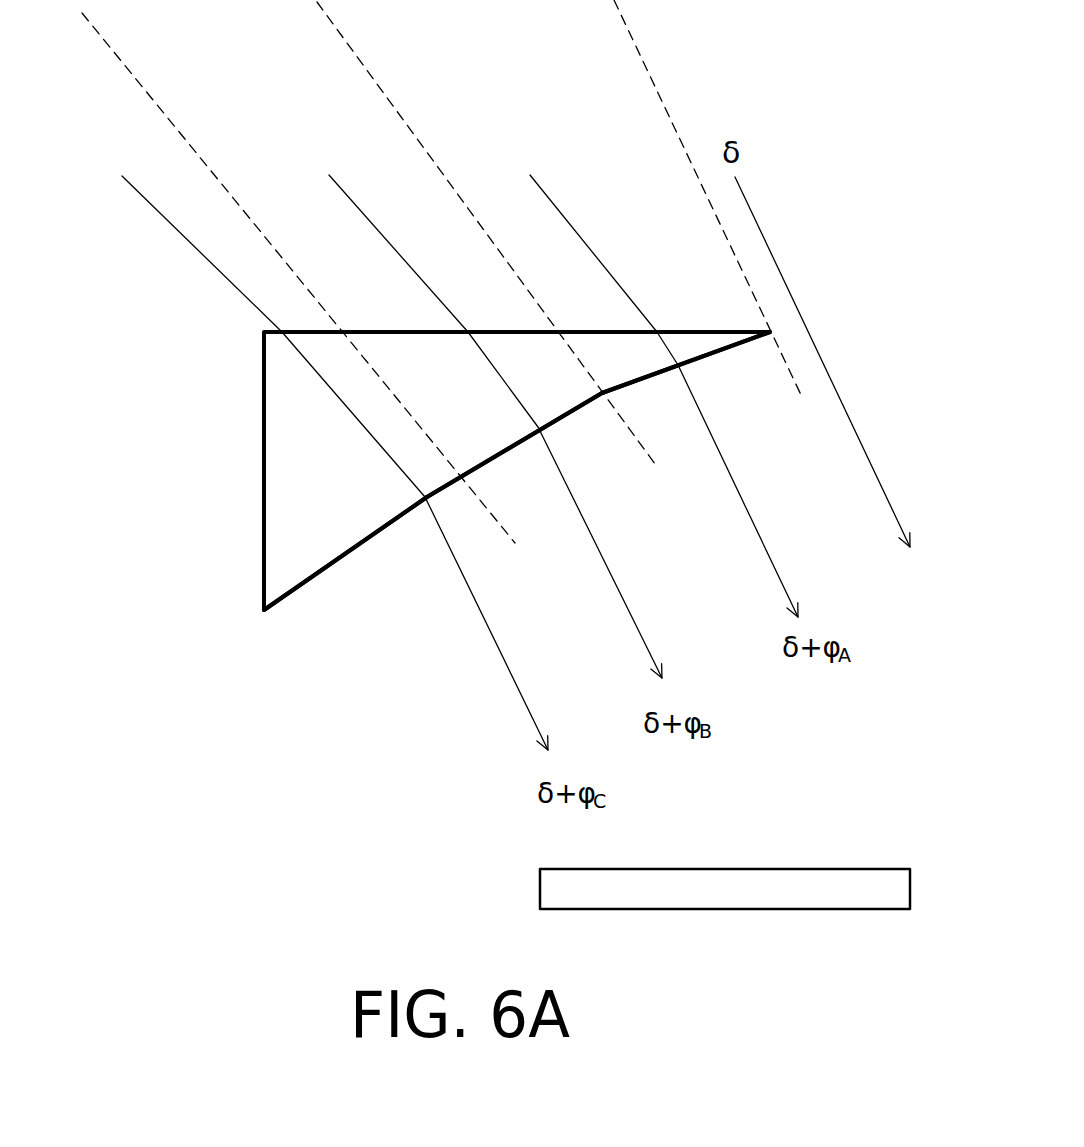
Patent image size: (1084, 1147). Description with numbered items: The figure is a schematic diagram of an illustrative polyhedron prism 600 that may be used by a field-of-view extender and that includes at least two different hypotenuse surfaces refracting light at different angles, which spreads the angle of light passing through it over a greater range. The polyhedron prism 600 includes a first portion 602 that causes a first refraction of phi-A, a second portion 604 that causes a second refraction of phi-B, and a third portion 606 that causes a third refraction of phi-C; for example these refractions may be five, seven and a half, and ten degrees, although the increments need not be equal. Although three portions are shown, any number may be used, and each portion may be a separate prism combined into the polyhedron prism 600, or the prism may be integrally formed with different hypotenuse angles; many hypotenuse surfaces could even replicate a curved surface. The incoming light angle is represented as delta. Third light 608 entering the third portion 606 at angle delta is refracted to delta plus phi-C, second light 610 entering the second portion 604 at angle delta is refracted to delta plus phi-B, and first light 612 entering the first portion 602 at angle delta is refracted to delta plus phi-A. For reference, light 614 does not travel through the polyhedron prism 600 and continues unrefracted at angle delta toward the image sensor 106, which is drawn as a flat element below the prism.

The polyhedron prism 600 is at (237, 620).
The first portion 602 is at (693, 342).
The second portion 604 is at (468, 388).
The third portion 606 is at (315, 507).
The third light 608 is at (522, 700).
The second light 610 is at (640, 642).
The first light 612 is at (780, 587).
The light 614 is at (893, 510).
The image sensor 106 is at (707, 910).